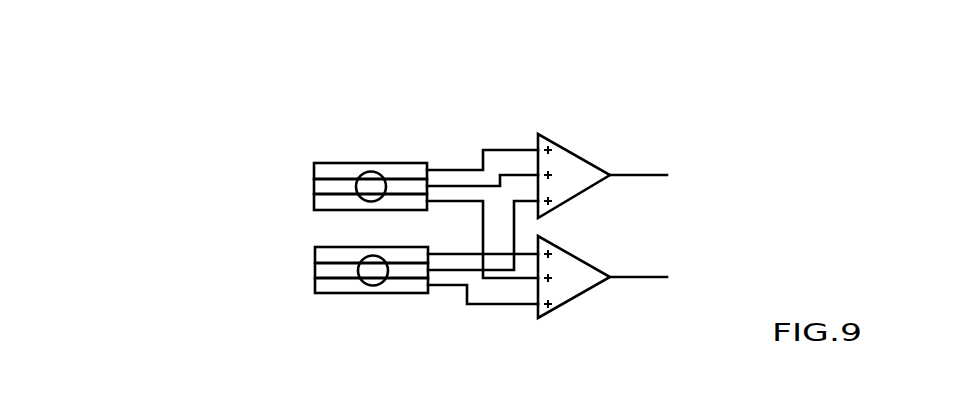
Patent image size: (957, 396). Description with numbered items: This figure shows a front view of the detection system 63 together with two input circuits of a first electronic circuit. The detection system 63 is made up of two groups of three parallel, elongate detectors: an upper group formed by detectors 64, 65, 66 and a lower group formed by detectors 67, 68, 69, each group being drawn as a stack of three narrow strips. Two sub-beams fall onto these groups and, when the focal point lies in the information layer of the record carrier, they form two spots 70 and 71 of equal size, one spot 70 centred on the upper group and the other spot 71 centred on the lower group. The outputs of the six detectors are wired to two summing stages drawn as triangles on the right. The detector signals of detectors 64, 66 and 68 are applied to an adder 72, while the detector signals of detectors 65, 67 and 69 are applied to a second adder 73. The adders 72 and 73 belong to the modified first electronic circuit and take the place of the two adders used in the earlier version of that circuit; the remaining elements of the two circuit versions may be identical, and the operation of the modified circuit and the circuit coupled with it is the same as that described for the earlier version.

The detection system 63 is at (214, 243).
The detector 64 is at (314, 168).
The detector 65 is at (314, 184).
The detector 66 is at (314, 199).
The detector 67 is at (315, 254).
The detector 68 is at (315, 268).
The detector 69 is at (315, 284).
The spot 70 is at (372, 172).
The spot 71 is at (376, 286).
The adder 72 is at (570, 162).
The second adder 73 is at (578, 272).